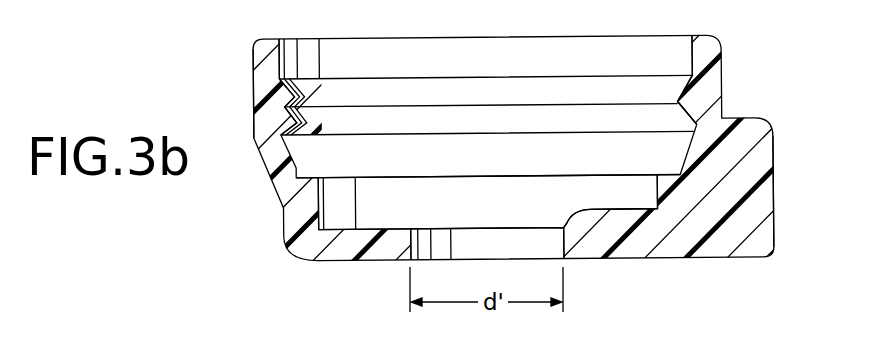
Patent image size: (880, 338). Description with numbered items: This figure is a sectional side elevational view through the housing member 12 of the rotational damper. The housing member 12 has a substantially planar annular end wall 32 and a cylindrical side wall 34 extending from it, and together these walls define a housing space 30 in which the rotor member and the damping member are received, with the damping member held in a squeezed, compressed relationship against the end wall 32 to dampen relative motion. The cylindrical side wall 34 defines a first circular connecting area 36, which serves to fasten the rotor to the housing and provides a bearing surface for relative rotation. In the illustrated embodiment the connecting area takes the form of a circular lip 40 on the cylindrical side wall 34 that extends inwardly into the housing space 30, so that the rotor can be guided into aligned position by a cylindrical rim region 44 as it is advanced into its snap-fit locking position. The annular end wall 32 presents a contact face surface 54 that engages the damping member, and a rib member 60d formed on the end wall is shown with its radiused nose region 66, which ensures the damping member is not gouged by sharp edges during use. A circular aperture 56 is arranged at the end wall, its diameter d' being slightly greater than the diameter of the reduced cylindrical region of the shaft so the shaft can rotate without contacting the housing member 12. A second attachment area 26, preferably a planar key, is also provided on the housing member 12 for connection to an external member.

The housing member 12 is at (729, 86).
The second attachment area 26 is at (777, 172).
The housing space 30 is at (517, 67).
The annular end wall 32 is at (363, 227).
The cylindrical side wall 34 is at (254, 78).
The first circular connecting area 36 is at (307, 100).
The circular lip 40 is at (291, 118).
The cylindrical rim region 44 is at (281, 62).
The contact face surface 54 is at (404, 227).
The circular aperture 56 is at (462, 265).
The rib member 60d is at (625, 211).
The radiused nose region 66 is at (573, 215).